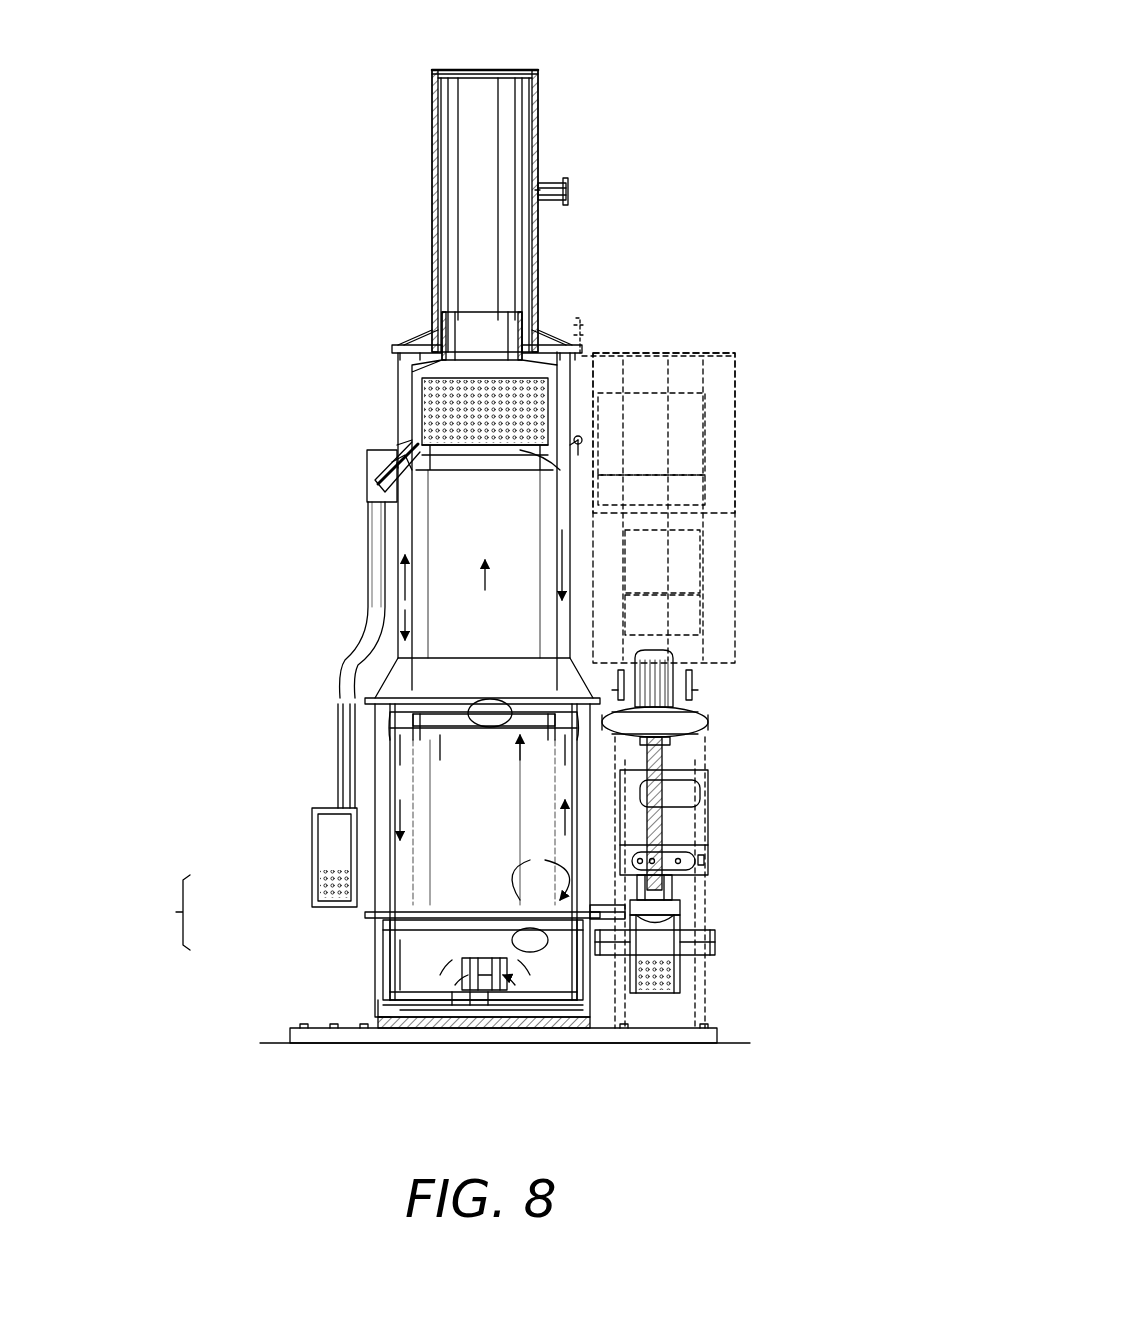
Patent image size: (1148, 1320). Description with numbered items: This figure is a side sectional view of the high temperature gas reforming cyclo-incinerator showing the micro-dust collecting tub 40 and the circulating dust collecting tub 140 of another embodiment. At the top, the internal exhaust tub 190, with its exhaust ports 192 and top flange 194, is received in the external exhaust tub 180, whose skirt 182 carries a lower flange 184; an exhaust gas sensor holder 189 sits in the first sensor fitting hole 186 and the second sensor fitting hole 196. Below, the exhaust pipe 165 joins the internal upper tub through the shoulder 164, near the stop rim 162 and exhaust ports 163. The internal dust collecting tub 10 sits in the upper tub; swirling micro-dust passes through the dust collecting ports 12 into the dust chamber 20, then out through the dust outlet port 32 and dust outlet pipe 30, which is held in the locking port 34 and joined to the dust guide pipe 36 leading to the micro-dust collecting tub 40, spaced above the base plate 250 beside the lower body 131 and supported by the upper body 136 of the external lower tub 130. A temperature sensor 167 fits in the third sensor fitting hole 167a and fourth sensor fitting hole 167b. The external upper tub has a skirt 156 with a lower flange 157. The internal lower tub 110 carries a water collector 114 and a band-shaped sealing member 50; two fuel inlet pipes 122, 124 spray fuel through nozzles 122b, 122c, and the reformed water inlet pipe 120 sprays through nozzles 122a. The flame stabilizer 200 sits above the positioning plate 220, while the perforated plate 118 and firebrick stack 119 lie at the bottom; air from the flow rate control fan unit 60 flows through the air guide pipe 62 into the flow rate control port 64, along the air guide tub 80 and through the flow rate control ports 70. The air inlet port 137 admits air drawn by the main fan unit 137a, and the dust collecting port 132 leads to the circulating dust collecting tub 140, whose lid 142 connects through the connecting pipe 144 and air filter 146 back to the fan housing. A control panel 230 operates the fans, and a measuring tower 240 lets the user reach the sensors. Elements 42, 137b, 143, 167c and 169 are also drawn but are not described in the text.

The internal dust collecting tub 10 is at (595, 378).
The dust collecting ports 12 is at (440, 410).
The dust chamber 20 is at (420, 372).
The dust outlet pipe 30 is at (410, 455).
The dust outlet port 32 is at (398, 470).
The locking port 34 is at (410, 468).
The dust guide pipe 36 is at (368, 468).
The micro-dust collecting tub 40 is at (318, 893).
The drain pipe 42 is at (336, 820).
The band-shaped sealing member 50 is at (378, 936).
The flow rate control fan unit 60 is at (716, 942).
The air guide pipe 62 is at (598, 922).
The flow rate control port 64 is at (550, 1012).
The flow rate control ports 70 is at (490, 1008).
The air guide tub 80 is at (380, 968).
The internal lower tub 110 is at (393, 862).
The water collector 114 is at (418, 940).
The perforated plate 118 is at (520, 1012).
The firebrick stack 119 is at (530, 1018).
The reformed water inlet pipe 120 is at (440, 725).
The fuel inlet pipe 122 is at (430, 720).
The nozzles 122a is at (545, 728).
The nozzles 122b is at (470, 695).
The nozzles 122c is at (440, 1012).
The fuel inlet pipe 124 is at (425, 960).
The external lower tub 130 is at (160, 912).
The lower cylindrical body 131 is at (385, 960).
The dust collecting port 132 is at (600, 905).
The upper cylindrical body 136 is at (318, 888).
The air inlet port 137 is at (575, 650).
The main fan unit 137a is at (706, 717).
The motor 137b is at (632, 700).
The circulating dust collecting tub 140 is at (662, 1000).
The lid 142 is at (682, 912).
The collection cup 143 is at (682, 958).
The connecting pipe 144 is at (662, 838).
The air filter 146 is at (682, 895).
The skirt 156 is at (390, 672).
The lower flange 157 is at (378, 705).
The stop rim 162 is at (592, 354).
The exhaust ports 163 is at (562, 352).
The shoulder 164 is at (545, 345).
The exhaust pipe 165 is at (482, 318).
The temperature sensor 167 is at (583, 440).
The third sensor fitting hole 167a is at (578, 455).
The fourth sensor fitting hole 167b is at (572, 455).
The sensor probe 167c is at (528, 448).
The catalyst support 169 is at (562, 415).
The external exhaust tub 180 is at (545, 265).
The skirt 182 is at (425, 335).
The lower flange 184 is at (395, 348).
The first sensor fitting hole 186 is at (550, 192).
The exhaust gas sensor holder 189 is at (562, 185).
The internal exhaust tub 190 is at (535, 115).
The exhaust ports 192 is at (488, 68).
The top flange 194 is at (530, 72).
The second sensor fitting hole 196 is at (530, 195).
The flame stabilizer 200 is at (485, 957).
The positioning plate 220 is at (400, 1012).
The control panel 230 is at (710, 778).
The measuring tower 240 is at (735, 527).
The base plate 250 is at (722, 1040).